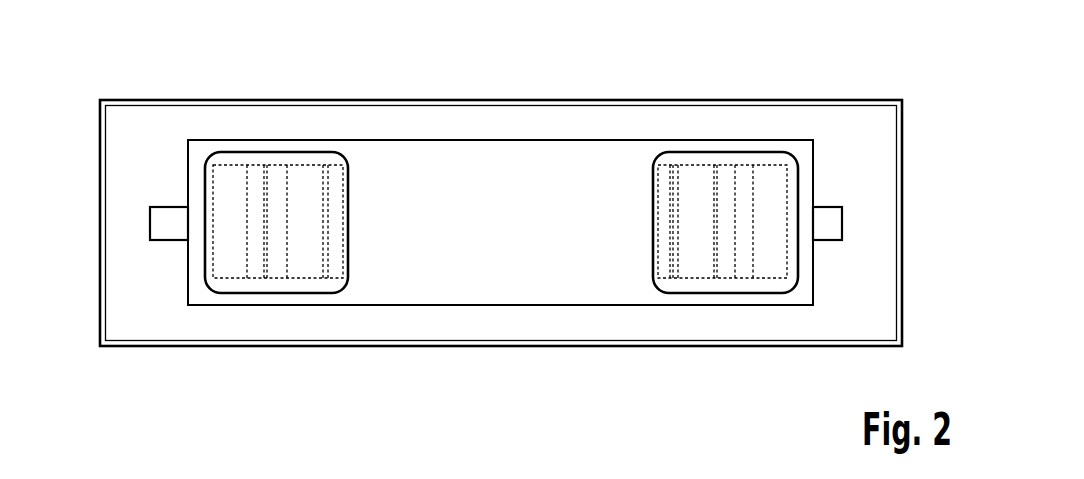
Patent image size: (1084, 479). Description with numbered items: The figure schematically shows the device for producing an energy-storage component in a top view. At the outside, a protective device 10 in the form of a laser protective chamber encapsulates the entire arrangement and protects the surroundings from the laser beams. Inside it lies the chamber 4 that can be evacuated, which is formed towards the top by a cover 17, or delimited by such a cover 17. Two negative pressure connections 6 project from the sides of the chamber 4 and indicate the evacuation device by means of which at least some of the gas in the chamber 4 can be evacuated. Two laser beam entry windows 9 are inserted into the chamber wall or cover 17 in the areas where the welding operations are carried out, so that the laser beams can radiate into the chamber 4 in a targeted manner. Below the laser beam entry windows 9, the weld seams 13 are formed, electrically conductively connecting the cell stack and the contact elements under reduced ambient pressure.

The protective device 10 is at (158, 100).
The chamber 4 is at (433, 138).
The cover 17 is at (534, 122).
The laser beam entry window 9 is at (237, 160).
The laser weld seam 13 is at (275, 173).
The negative pressure connection 6 is at (148, 225).